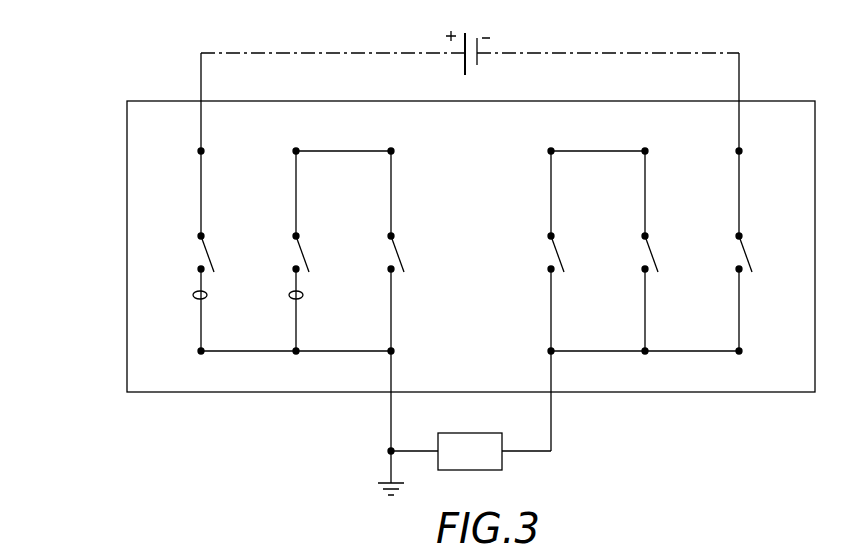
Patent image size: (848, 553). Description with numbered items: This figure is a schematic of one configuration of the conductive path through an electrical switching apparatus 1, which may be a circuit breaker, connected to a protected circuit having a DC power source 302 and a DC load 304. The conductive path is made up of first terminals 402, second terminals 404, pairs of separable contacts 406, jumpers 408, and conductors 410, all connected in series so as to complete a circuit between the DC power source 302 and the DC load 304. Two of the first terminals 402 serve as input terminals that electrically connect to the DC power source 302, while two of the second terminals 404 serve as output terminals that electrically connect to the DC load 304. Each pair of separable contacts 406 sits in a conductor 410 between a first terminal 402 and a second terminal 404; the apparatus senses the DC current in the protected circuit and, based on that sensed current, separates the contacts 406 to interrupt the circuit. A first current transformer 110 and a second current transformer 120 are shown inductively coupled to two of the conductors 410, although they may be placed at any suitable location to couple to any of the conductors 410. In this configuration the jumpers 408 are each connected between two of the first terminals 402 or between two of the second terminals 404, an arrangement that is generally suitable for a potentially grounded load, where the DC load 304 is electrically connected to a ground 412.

The electrical switching apparatus 1 is at (801, 99).
The first current transformer 110 is at (194, 296).
The second current transformer 120 is at (290, 296).
The DC power source 302 is at (477, 65).
The DC load 304 is at (455, 433).
The first terminals 402 is at (199, 151).
The second terminals 404 is at (199, 352).
The pairs of separable contacts 406 is at (211, 260).
The jumpers 408 is at (365, 151).
The conductors 410 is at (200, 188).
The ground 412 is at (385, 482).